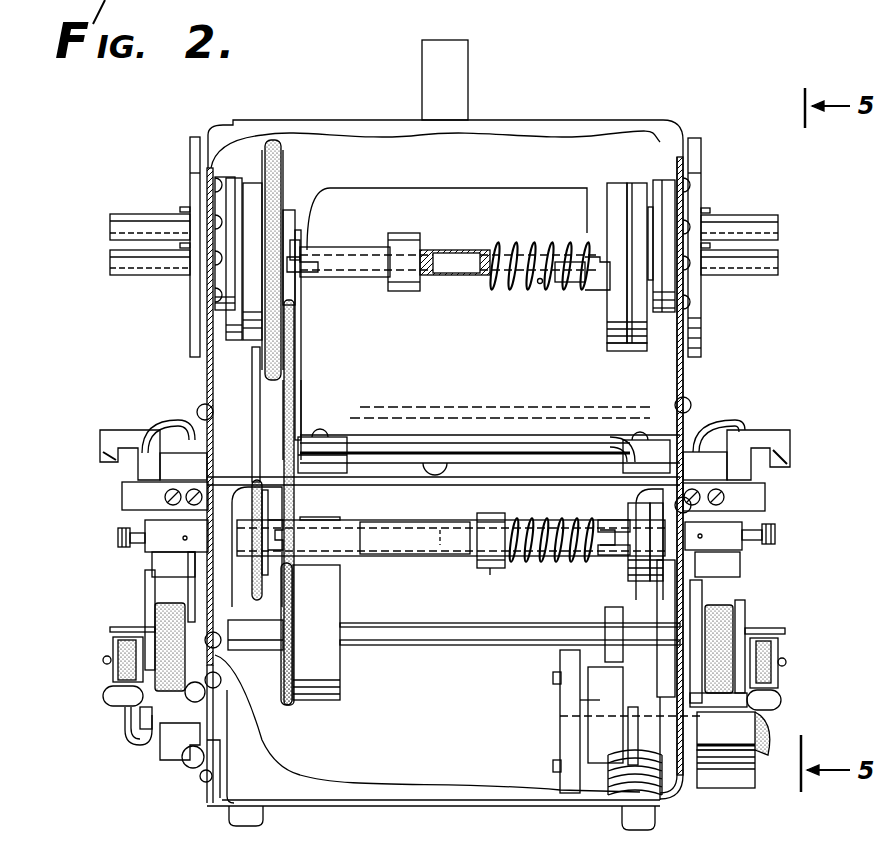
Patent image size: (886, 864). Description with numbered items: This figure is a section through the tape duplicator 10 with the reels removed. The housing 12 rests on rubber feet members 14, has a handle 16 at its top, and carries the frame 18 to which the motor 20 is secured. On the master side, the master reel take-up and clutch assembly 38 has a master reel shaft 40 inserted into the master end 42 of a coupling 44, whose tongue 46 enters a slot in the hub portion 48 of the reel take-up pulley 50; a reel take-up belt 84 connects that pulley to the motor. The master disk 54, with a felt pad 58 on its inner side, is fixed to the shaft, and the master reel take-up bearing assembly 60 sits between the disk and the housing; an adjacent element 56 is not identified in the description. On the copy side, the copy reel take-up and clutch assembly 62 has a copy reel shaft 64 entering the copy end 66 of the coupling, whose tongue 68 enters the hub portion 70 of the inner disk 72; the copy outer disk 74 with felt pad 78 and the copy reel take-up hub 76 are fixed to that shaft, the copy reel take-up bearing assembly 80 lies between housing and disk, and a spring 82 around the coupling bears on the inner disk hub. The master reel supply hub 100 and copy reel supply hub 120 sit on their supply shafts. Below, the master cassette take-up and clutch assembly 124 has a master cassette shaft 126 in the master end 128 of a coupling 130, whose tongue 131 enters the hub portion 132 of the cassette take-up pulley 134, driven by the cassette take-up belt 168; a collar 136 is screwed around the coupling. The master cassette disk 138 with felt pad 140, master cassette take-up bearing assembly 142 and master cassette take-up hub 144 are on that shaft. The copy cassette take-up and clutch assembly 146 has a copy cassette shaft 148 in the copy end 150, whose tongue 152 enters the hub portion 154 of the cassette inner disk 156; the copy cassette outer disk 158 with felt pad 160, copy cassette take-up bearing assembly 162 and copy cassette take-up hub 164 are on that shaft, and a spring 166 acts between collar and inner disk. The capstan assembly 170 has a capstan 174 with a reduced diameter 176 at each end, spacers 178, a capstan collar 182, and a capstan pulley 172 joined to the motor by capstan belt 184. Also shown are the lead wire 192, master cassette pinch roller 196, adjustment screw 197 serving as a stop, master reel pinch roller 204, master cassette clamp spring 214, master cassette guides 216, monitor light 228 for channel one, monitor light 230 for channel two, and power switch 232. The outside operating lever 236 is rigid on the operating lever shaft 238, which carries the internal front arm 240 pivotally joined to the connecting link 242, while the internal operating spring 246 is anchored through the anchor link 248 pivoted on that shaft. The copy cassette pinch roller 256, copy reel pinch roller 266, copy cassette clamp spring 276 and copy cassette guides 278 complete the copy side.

The tape duplicator 10 is at (748, 82).
The housing 12 is at (440, 795).
The feet members 14 is at (258, 822).
The handle 16 is at (460, 66).
The frame 18 is at (378, 480).
The motor 20 is at (457, 337).
The master reel take-up and clutch assembly 38 is at (168, 190).
The master reel shaft 40 is at (418, 250).
The master end 42 is at (335, 258).
The coupling 44 is at (440, 252).
The tongue 46 is at (330, 270).
The hub portion 48 is at (292, 228).
The reel take-up pulley 50 is at (253, 152).
The master disk 54 is at (262, 196).
The shaft 56 is at (118, 262).
The felt pad 58 is at (285, 338).
The master reel take-up bearing assembly 60 is at (230, 282).
The copy reel take-up and clutch assembly 62 is at (720, 187).
The copy reel shaft 64 is at (460, 272).
The copy end 66 is at (548, 255).
The tongue 68 is at (582, 270).
The hub portion 70 is at (590, 230).
The inner disk 72 is at (618, 195).
The copy outer disk 74 is at (640, 190).
The copy reel take-up hub 76 is at (778, 262).
The felt pad 78 is at (603, 325).
The copy reel take-up bearing assembly 80 is at (660, 290).
The spring 82 is at (525, 285).
The reel take-up belt 84 is at (275, 360).
The master reel supply hub 100 is at (118, 228).
The copy reel supply hub 120 is at (755, 230).
The master cassette take-up and clutch assembly 124 is at (100, 550).
The master cassette shaft 126 is at (400, 538).
The master end 128 is at (308, 530).
The coupling 130 is at (420, 543).
The tongue 131 is at (290, 540).
The hub portion 132 is at (268, 520).
The cassette take-up pulley 134 is at (300, 595).
The collar 136 is at (488, 570).
The master cassette disk 138 is at (190, 580).
The felt pad 140 is at (200, 508).
The master cassette take-up bearing assembly 142 is at (170, 545).
The master cassette take-up hub 144 is at (118, 536).
The copy cassette take-up and clutch assembly 146 is at (815, 580).
The copy cassette shaft 148 is at (490, 520).
The copy end 150 is at (580, 550).
The tongue 152 is at (598, 548).
The hub portion 154 is at (618, 528).
The cassette inner disk 156 is at (650, 520).
The copy cassette outer disk 158 is at (700, 520).
The felt pad 160 is at (710, 553).
The copy cassette take-up bearing assembly 162 is at (705, 576).
The copy cassette take-up hub 164 is at (775, 534).
The spring 166 is at (522, 562).
The cassette take-up belt 168 is at (252, 420).
The capstan assembly 170 is at (340, 760).
The capstan pulley 172 is at (322, 670).
The capstan 174 is at (436, 630).
The reduced diameter 176 is at (112, 629).
The spacers 178 is at (245, 635).
The capstan collar 182 is at (608, 620).
The capstan belt 184 is at (290, 390).
The lead wire 192 is at (135, 725).
The master cassette pinch roller 196 is at (117, 658).
The adjustment screw 197 is at (108, 692).
The master reel pinch roller 204 is at (168, 690).
The master cassette clamp spring 214 is at (150, 430).
The master cassette guides 216 is at (100, 445).
The monitor light 228 is at (183, 760).
The monitor light 230 is at (197, 792).
The power switch 232 is at (200, 778).
The outside operating lever 236 is at (720, 782).
The operating lever shaft 238 is at (735, 730).
The internal front arm 240 is at (562, 712).
The connecting link 242 is at (575, 738).
The internal operating spring 246 is at (665, 795).
The anchor link 248 is at (635, 705).
The copy cassette pinch roller 256 is at (775, 670).
The copy reel pinch roller 266 is at (722, 620).
The copy cassette clamp spring 276 is at (745, 430).
The copy cassette guides 278 is at (790, 440).